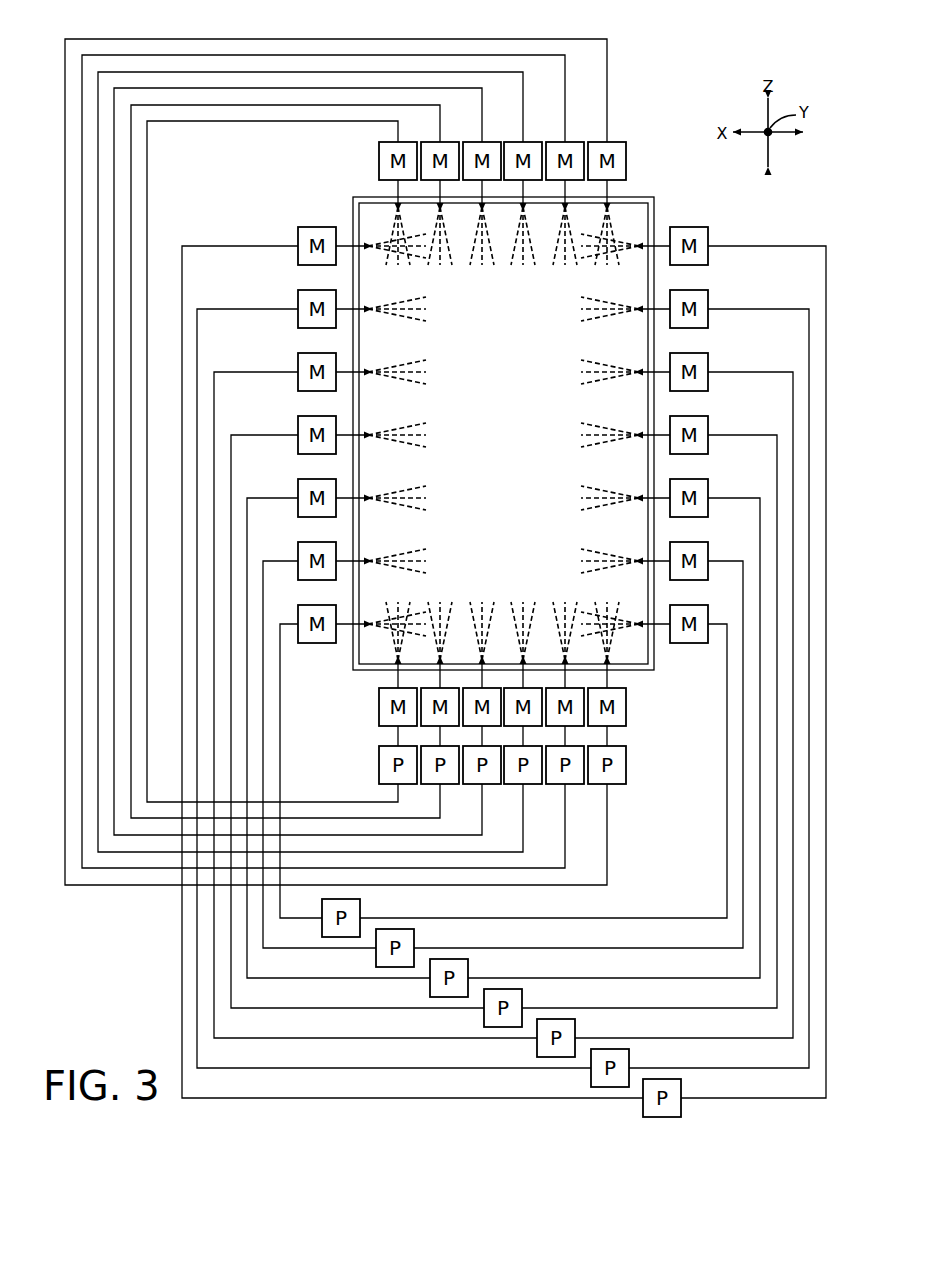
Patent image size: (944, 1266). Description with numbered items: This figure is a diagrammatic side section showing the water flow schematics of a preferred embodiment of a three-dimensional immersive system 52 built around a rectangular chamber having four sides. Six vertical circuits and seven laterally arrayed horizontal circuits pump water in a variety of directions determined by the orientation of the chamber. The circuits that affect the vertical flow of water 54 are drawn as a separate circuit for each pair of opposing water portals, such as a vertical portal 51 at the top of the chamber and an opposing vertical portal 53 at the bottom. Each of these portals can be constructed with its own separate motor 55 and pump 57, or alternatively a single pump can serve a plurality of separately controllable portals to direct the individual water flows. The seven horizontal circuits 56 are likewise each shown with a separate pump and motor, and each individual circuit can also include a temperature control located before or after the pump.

The vertical portal 51 is at (396, 201).
The fluid delivery system 52 is at (138, 924).
The vertical portal 53 is at (396, 668).
The vertical flow of water 54 is at (540, 55).
The motor 55 is at (383, 711).
The side supply lines 56 is at (826, 612).
The pump 57 is at (383, 768).